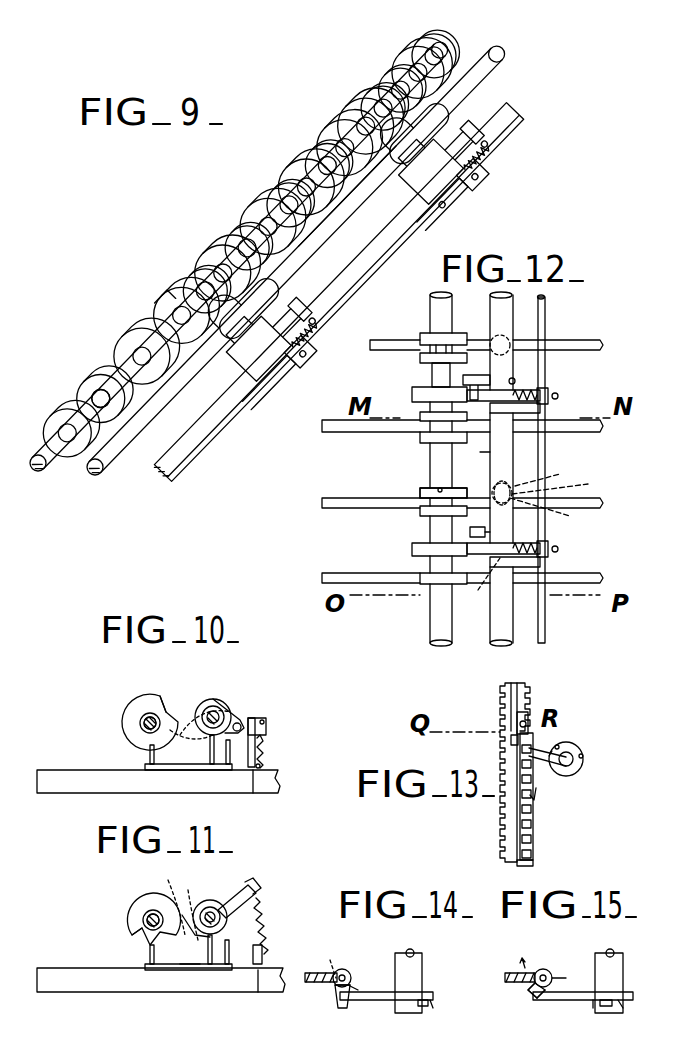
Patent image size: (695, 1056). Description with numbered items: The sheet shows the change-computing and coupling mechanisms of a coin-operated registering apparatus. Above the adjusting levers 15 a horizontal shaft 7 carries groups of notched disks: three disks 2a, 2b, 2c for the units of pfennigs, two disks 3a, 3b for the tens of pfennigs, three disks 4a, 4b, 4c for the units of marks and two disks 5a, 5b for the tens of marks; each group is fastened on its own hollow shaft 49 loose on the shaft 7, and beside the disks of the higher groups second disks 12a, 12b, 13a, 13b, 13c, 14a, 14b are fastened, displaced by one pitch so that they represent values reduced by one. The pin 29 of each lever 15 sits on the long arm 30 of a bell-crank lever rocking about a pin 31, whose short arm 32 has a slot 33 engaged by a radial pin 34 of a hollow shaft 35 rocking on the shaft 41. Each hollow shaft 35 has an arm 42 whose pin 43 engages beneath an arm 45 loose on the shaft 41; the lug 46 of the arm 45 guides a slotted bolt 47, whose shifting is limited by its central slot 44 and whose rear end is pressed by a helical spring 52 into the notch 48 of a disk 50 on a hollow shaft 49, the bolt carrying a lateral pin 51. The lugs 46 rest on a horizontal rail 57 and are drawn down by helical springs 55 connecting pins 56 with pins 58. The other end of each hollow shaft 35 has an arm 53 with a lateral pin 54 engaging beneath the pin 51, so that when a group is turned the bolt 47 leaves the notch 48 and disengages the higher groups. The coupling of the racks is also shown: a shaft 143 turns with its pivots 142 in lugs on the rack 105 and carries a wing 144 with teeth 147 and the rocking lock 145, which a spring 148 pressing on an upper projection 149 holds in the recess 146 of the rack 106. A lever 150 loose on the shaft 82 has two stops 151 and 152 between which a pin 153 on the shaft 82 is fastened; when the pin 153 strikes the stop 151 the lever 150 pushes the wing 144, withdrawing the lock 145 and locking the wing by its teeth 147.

In FIG. 9, the horizontal shaft 7 is at (42, 468).
In FIG. 12, the horizontal shaft 7 is at (432, 380).
In FIG. 10, the horizontal shaft 7 is at (118, 697).
In FIG. 11, the horizontal shaft 7 is at (150, 890).
In FIG. 9, the shaft 41 is at (105, 472).
In FIG. 12, the shaft 41 is at (490, 621).
In FIG. 10, the shaft 41 is at (218, 700).
In FIG. 11, the shaft 41 is at (214, 900).
In FIG. 9, the horizontal rail 57 is at (183, 478).
In FIG. 12, the horizontal rail 57 is at (546, 313).
In FIG. 10, the horizontal rail 57 is at (254, 794).
In FIG. 11, the horizontal rail 57 is at (257, 993).
In FIG. 12, the adjusting lever 15 is at (368, 432).
In FIG. 10, the adjusting lever 15 is at (70, 790).
In FIG. 11, the adjusting lever 15 is at (78, 988).
In FIG. 9, the notched disk 2a is at (52, 416).
In FIG. 9, the notched disk 2b is at (97, 376).
In FIG. 9, the notched disk 2c is at (128, 333).
In FIG. 12, the notched disk 2c is at (422, 577).
In FIG. 9, the notched disk 3a is at (171, 288).
In FIG. 12, the notched disk 3a is at (424, 514).
In FIG. 9, the notched disk 3b is at (216, 244).
In FIG. 12, the notched disk 3b is at (422, 440).
In FIG. 9, the notched disk 4a is at (264, 197).
In FIG. 12, the notched disk 4a is at (432, 370).
In FIG. 9, the notched disk 4b is at (302, 158).
In FIG. 9, the notched disk 4c is at (341, 118).
In FIG. 9, the notched disk 5a is at (372, 97).
In FIG. 9, the notched disk 5b is at (433, 49).
In FIG. 9, the second disk 12a is at (192, 270).
In FIG. 12, the second disk 12a is at (420, 493).
In FIG. 9, the second disk 12b is at (240, 224).
In FIG. 12, the second disk 12b is at (420, 414).
In FIG. 9, the second disk 13a is at (283, 180).
In FIG. 9, the second disk 13b is at (319, 142).
In FIG. 12, the second disk 13b is at (420, 338).
In FIG. 9, the second disk 13c is at (370, 87).
In FIG. 9, the second disk 14a is at (397, 65).
In FIG. 9, the second disk 14b is at (455, 45).
In FIG. 12, the pin 29 is at (438, 489).
In FIG. 10, the pin 29 is at (148, 758).
In FIG. 11, the pin 29 is at (148, 955).
In FIG. 12, the long arm 30 is at (495, 342).
In FIG. 10, the long arm 30 is at (150, 770).
In FIG. 11, the long arm 30 is at (165, 970).
In FIG. 12, the pin 31 is at (549, 513).
In FIG. 10, the pin 31 is at (229, 770).
In FIG. 11, the pin 31 is at (228, 971).
In FIG. 12, the short arm 32 is at (559, 484).
In FIG. 12, the slot 33 is at (508, 485).
In FIG. 12, the radial pin 34 is at (547, 474).
In FIG. 10, the radial pin 34 is at (208, 760).
In FIG. 11, the radial pin 34 is at (213, 950).
In FIG. 9, the hollow shaft 35 is at (350, 208).
In FIG. 12, the hollow shaft 35 is at (475, 458).
In FIG. 9, the arm 42 is at (393, 178).
In FIG. 12, the arm 42 is at (515, 414).
In FIG. 9, the pin 43 is at (412, 172).
In FIG. 12, the central slot 44 is at (482, 581).
In FIG. 10, the central slot 44 is at (236, 716).
In FIG. 9, the arm 45 is at (250, 400).
In FIG. 12, the arm 45 is at (548, 402).
In FIG. 9, the lug 46 is at (296, 357).
In FIG. 10, the lug 46 is at (266, 722).
In FIG. 11, the lug 46 is at (252, 890).
In FIG. 9, the slotted bolt 47 is at (258, 330).
In FIG. 12, the slotted bolt 47 is at (520, 390).
In FIG. 10, the slotted bolt 47 is at (256, 718).
In FIG. 9, the notch 48 is at (170, 300).
In FIG. 10, the notch 48 is at (164, 702).
In FIG. 11, the notch 48 is at (130, 933).
In FIG. 9, the hollow shaft 49 is at (92, 395).
In FIG. 12, the hollow shaft 49 is at (430, 621).
In FIG. 10, the hollow shaft 49 is at (140, 723).
In FIG. 11, the hollow shaft 49 is at (143, 920).
In FIG. 9, the disk 50 is at (140, 325).
In FIG. 12, the disk 50 is at (412, 550).
In FIG. 10, the disk 50 is at (143, 705).
In FIG. 11, the disk 50 is at (132, 905).
In FIG. 12, the lateral pin 51 is at (516, 380).
In FIG. 10, the lateral pin 51 is at (198, 706).
In FIG. 11, the lateral pin 51 is at (171, 898).
In FIG. 9, the helical spring 52 is at (210, 370).
In FIG. 12, the helical spring 52 is at (515, 568).
In FIG. 12, the arm 53 is at (479, 524).
In FIG. 11, the arm 53 is at (190, 971).
In FIG. 12, the lateral pin 54 is at (478, 378).
In FIG. 10, the lateral pin 54 is at (183, 738).
In FIG. 11, the lateral pin 54 is at (194, 907).
In FIG. 9, the helical spring 55 is at (273, 386).
In FIG. 12, the helical spring 55 is at (553, 396).
In FIG. 10, the helical spring 55 is at (264, 748).
In FIG. 11, the helical spring 55 is at (266, 930).
In FIG. 9, the pin 56 is at (290, 366).
In FIG. 10, the pin 56 is at (265, 722).
In FIG. 11, the pin 56 is at (262, 888).
In FIG. 9, the pin 58 is at (264, 404).
In FIG. 10, the pin 58 is at (262, 766).
In FIG. 11, the pin 58 is at (264, 958).
In FIG. 13, the shaft 82 is at (576, 771).
In FIG. 14, the shaft 82 is at (414, 953).
In FIG. 15, the shaft 82 is at (614, 953).
In FIG. 13, the rack 105 is at (528, 688).
In FIG. 13, the rack 106 is at (510, 686).
In FIG. 14, the rack 106 is at (310, 972).
In FIG. 15, the rack 106 is at (508, 972).
In FIG. 13, the pivots 142 is at (503, 718).
In FIG. 14, the pivots 142 is at (346, 970).
In FIG. 15, the pivots 142 is at (549, 972).
In FIG. 13, the shaft 143 is at (534, 830).
In FIG. 15, the shaft 143 is at (571, 978).
In FIG. 13, the wing 144 is at (535, 850).
In FIG. 14, the wing 144 is at (340, 1009).
In FIG. 15, the wing 144 is at (534, 1000).
In FIG. 14, the rocking lock 145 is at (330, 960).
In FIG. 15, the rocking lock 145 is at (520, 952).
In FIG. 13, the recess 146 is at (510, 740).
In FIG. 13, the teeth 147 is at (534, 812).
In FIG. 13, the spring 148 is at (517, 722).
In FIG. 14, the spring 148 is at (336, 988).
In FIG. 15, the spring 148 is at (528, 990).
In FIG. 13, the upper projection 149 is at (527, 722).
In FIG. 14, the upper projection 149 is at (355, 990).
In FIG. 15, the upper projection 149 is at (535, 998).
In FIG. 13, the lever 150 is at (546, 775).
In FIG. 14, the lever 150 is at (375, 1000).
In FIG. 15, the lever 150 is at (560, 1000).
In FIG. 13, the stop 151 is at (553, 751).
In FIG. 14, the stop 151 is at (434, 1010).
In FIG. 15, the stop 151 is at (592, 1005).
In FIG. 13, the stop 152 is at (584, 757).
In FIG. 15, the stop 152 is at (622, 1010).
In FIG. 13, the pin 153 is at (560, 747).
In FIG. 14, the pin 153 is at (420, 1007).
In FIG. 15, the pin 153 is at (605, 1007).